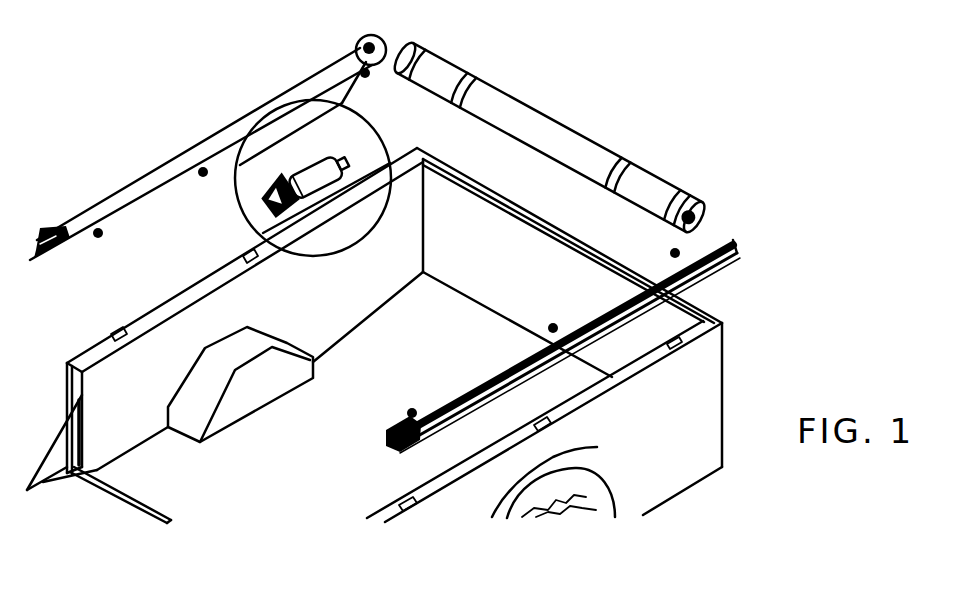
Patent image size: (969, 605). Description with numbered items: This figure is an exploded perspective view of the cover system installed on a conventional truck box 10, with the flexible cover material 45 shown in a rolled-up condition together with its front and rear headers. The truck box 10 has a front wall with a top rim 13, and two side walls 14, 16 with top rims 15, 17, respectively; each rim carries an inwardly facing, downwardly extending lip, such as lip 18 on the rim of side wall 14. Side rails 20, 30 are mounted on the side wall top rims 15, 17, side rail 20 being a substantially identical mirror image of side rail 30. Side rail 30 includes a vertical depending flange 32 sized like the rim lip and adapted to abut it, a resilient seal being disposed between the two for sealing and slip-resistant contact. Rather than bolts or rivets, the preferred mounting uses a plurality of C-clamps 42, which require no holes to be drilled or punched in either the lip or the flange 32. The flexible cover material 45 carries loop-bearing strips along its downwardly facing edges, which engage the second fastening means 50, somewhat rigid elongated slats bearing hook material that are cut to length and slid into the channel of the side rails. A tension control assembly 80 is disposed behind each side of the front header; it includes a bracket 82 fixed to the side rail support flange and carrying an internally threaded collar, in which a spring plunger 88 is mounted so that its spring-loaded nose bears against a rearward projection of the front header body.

The truck box 10 is at (750, 420).
The top rim 13 is at (558, 231).
The side wall 14 is at (243, 368).
The top rim 15 is at (178, 299).
The side wall 16 is at (676, 446).
The top rim 17 is at (620, 369).
The downwardly extending lip 18 is at (221, 300).
The side rail 20 is at (146, 190).
The side rail 30 is at (700, 270).
The vertical depending flange 32 is at (393, 447).
The C-clamps 42 is at (100, 244).
The flexible cover material 45 is at (598, 155).
The second fastening means 50 is at (737, 256).
The tension control assembly 80 is at (246, 222).
The bracket 82 is at (318, 203).
The spring plunger 88 is at (337, 163).